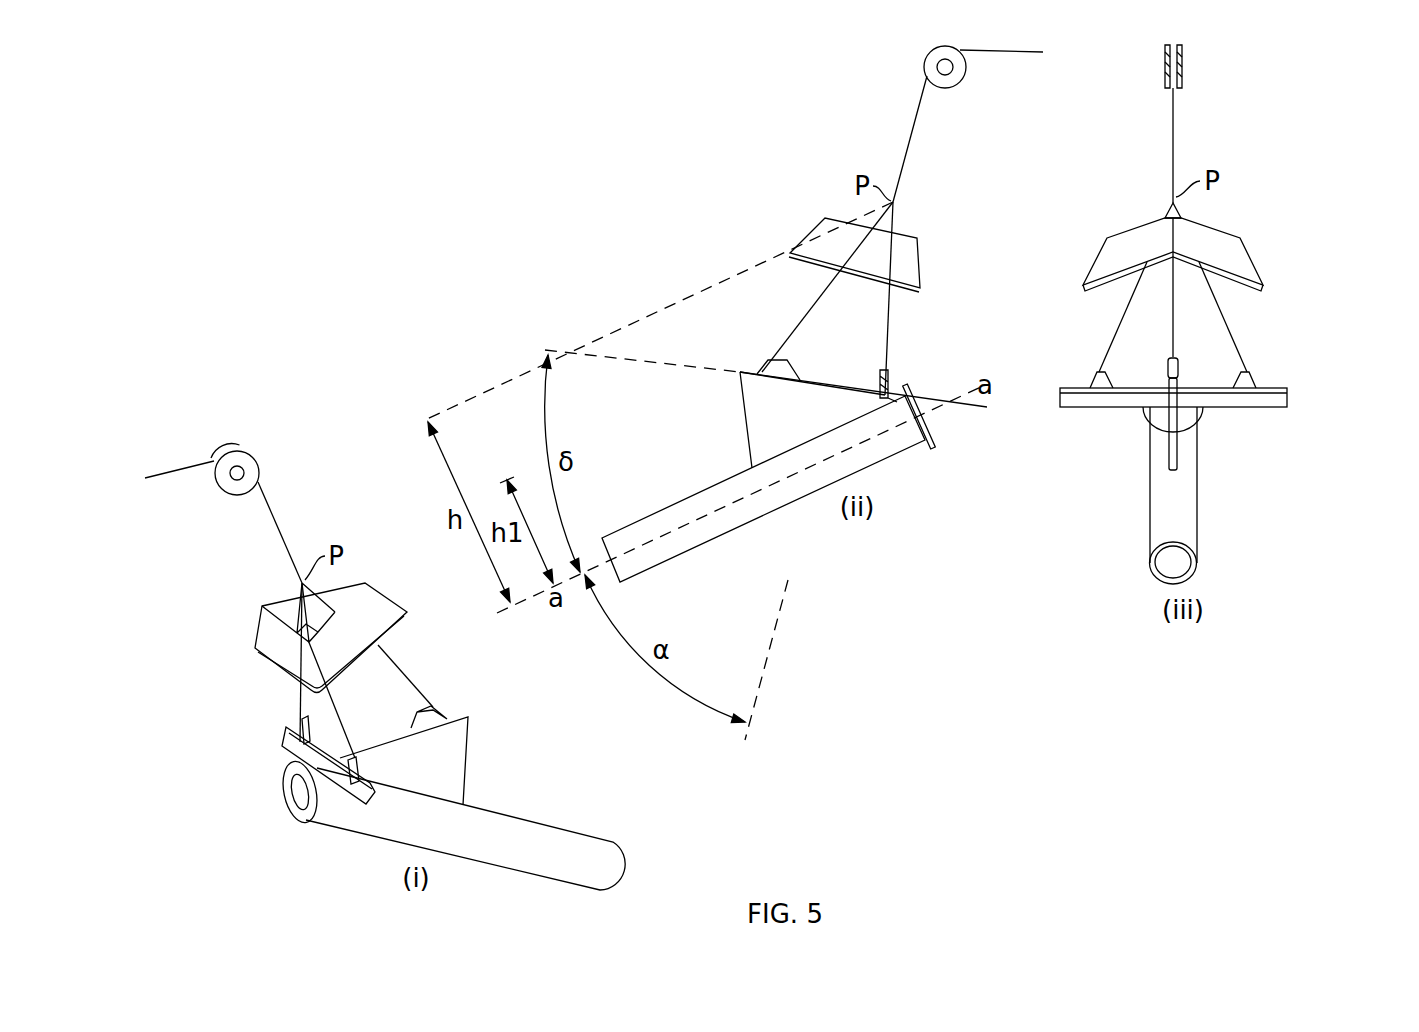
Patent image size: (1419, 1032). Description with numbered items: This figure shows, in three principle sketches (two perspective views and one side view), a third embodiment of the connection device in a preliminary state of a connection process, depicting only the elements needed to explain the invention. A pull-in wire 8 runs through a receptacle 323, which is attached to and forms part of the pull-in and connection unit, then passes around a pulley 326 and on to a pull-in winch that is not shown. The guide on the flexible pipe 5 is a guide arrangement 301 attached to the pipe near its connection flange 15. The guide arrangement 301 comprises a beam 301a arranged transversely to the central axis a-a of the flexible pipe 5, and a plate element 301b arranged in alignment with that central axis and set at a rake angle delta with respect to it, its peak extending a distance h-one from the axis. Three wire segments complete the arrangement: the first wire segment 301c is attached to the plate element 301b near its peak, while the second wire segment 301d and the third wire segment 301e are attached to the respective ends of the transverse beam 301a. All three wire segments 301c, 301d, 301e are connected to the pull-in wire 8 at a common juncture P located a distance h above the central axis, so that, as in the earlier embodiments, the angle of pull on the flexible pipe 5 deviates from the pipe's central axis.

The flexible pipe 5 is at (540, 864).
The pull-in wire 8 is at (275, 519).
The connection flange 15 is at (289, 812).
The guide arrangement 301 is at (485, 693).
The beam 301a is at (287, 729).
The plate element 301b is at (398, 776).
The first wire segment 301c is at (397, 670).
The second wire segment 301d is at (300, 700).
The third wire segment 301e is at (447, 716).
The receptacle 323 is at (388, 597).
The pulley 326 is at (259, 456).